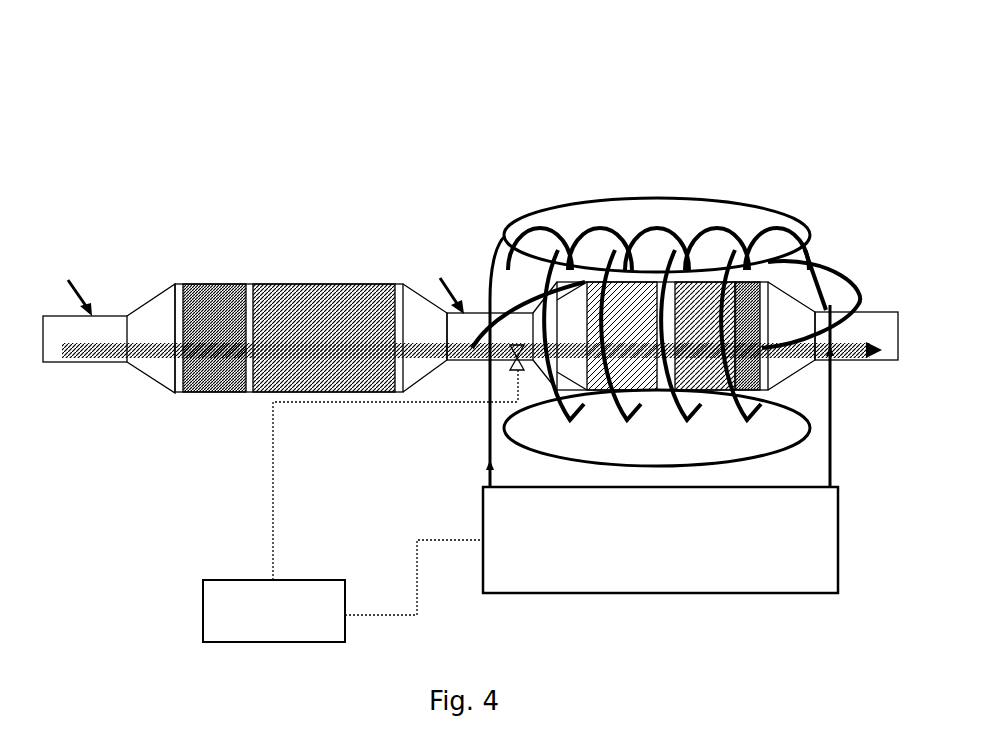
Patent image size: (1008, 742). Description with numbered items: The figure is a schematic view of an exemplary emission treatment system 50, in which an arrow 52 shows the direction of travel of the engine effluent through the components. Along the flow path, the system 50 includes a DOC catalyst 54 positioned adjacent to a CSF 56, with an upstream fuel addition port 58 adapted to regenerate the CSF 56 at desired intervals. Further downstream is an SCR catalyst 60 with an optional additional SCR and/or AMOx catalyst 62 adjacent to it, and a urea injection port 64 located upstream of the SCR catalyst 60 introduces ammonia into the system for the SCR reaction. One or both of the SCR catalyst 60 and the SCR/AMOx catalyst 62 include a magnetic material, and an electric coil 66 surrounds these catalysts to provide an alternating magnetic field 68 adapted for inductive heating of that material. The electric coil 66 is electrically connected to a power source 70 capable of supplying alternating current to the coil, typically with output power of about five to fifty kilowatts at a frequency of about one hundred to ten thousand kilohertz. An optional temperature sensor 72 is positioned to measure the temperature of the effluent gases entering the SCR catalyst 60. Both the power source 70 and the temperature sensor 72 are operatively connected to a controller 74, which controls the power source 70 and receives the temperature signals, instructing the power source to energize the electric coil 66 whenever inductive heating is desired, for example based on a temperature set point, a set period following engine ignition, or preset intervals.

The emission treatment system 50 is at (252, 192).
The arrow 52 is at (75, 363).
The DOC catalyst 54 is at (218, 284).
The CSF 56 is at (325, 284).
The fuel addition port 58 is at (63, 281).
The SCR catalyst 60 is at (594, 282).
The SCR/AMOx catalyst 62 is at (713, 282).
The urea injection port 64 is at (460, 285).
The electric coil 66 is at (837, 415).
The alternating magnetic field 68 is at (860, 296).
The power source 70 is at (483, 497).
The temperature sensor 72 is at (483, 373).
The controller 74 is at (240, 580).